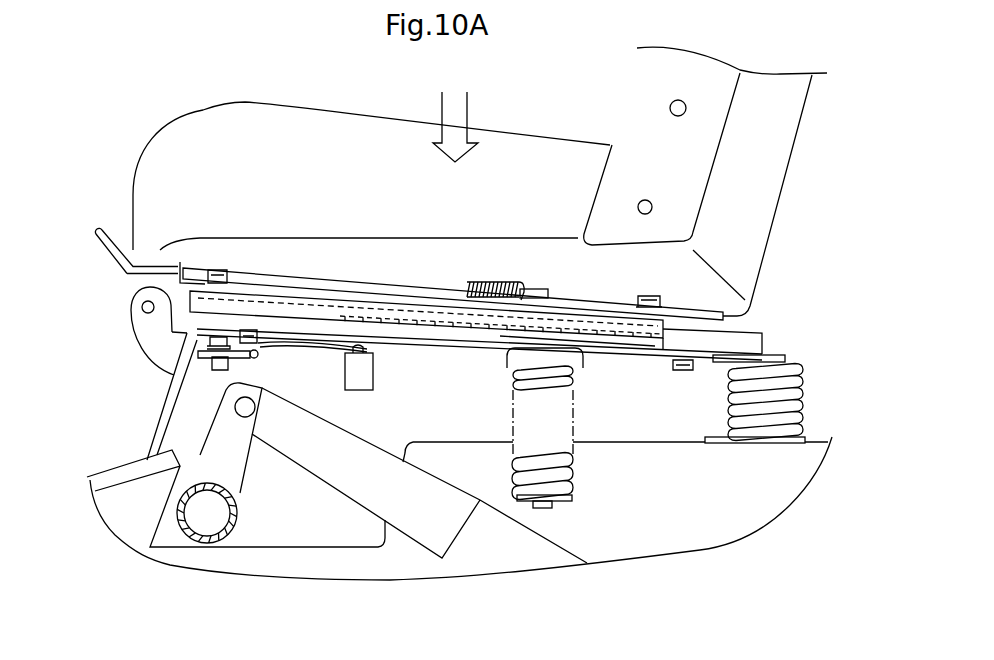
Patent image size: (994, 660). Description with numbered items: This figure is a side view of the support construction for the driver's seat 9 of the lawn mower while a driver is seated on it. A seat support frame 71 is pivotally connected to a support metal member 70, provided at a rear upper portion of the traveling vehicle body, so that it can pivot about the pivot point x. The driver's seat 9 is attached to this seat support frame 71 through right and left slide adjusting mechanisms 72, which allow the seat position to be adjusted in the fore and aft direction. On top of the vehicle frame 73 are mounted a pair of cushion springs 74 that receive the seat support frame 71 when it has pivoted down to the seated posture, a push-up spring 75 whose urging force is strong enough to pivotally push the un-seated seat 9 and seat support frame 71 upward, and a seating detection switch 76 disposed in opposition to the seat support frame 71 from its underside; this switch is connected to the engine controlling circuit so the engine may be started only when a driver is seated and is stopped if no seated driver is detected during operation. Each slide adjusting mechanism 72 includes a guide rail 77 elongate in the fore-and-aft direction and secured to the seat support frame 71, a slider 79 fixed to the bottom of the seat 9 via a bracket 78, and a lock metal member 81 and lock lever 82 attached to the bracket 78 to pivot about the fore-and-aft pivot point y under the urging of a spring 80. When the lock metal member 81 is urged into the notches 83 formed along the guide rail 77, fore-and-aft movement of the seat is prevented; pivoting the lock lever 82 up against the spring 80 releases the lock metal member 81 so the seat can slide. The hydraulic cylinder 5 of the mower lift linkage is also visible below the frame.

The hydraulic cylinder 5 is at (533, 540).
The driver's seat 9 is at (203, 122).
The support metal member 70 is at (145, 345).
The seat support frame 71 is at (493, 346).
The slide adjusting mechanism 72 is at (306, 292).
The vehicle frame 73 is at (740, 492).
The cushion spring 74 is at (803, 400).
The push-up spring 75 is at (572, 456).
The seating detection switch 76 is at (360, 390).
The guide rail 77 is at (757, 335).
The bracket 78 is at (607, 301).
The slider 79 is at (648, 340).
The spring 80 is at (493, 290).
The lock metal member 81 is at (417, 303).
The lock lever 82 is at (110, 230).
The notches 83 is at (413, 320).
The pivot point x is at (142, 307).
The fore-and-aft pivot point y is at (127, 268).